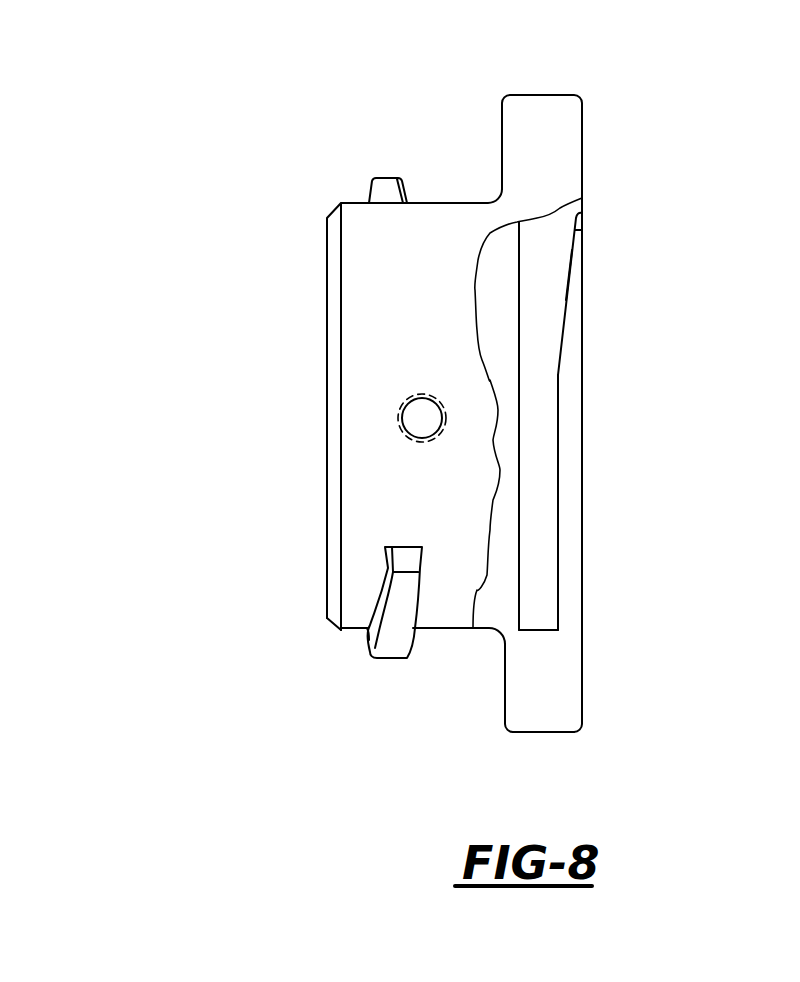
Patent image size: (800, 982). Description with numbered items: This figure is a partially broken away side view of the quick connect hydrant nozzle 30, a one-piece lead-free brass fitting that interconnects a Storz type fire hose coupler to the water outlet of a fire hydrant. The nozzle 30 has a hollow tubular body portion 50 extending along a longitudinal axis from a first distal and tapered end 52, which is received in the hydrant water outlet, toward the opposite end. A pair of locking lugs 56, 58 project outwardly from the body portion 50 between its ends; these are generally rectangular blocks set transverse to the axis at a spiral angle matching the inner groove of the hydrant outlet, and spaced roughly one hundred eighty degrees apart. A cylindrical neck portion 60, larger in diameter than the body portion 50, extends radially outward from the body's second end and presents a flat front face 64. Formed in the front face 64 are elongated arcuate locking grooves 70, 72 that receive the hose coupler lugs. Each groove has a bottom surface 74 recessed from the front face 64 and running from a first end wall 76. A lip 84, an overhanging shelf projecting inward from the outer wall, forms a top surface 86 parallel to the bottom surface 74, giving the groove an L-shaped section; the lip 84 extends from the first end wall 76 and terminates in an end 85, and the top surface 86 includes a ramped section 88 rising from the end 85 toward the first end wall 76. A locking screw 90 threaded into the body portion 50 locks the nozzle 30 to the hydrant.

The quick connect hydrant nozzle 30 is at (685, 207).
The hollow tubular body portion 50 is at (332, 247).
The first distal and tapered end 52 is at (327, 610).
The locking lug 56 is at (378, 656).
The locking lug 58 is at (385, 176).
The cylindrical neck portion 60 is at (588, 102).
The flat front face 64 is at (583, 722).
The locking groove 70 is at (634, 426).
The locking groove 72 is at (540, 603).
The bottom surface 74 is at (516, 335).
The first end wall 76 is at (533, 632).
The lip 84 is at (582, 410).
The end of lip 85 is at (583, 213).
The top surface 86 is at (560, 508).
The ramped section 88 is at (570, 288).
The locking screw 90 is at (405, 437).